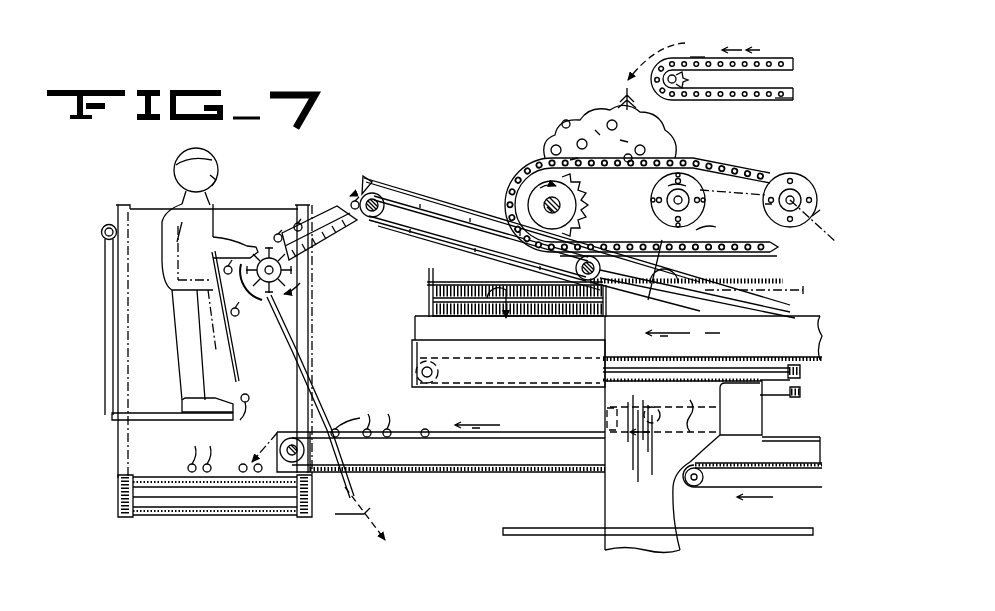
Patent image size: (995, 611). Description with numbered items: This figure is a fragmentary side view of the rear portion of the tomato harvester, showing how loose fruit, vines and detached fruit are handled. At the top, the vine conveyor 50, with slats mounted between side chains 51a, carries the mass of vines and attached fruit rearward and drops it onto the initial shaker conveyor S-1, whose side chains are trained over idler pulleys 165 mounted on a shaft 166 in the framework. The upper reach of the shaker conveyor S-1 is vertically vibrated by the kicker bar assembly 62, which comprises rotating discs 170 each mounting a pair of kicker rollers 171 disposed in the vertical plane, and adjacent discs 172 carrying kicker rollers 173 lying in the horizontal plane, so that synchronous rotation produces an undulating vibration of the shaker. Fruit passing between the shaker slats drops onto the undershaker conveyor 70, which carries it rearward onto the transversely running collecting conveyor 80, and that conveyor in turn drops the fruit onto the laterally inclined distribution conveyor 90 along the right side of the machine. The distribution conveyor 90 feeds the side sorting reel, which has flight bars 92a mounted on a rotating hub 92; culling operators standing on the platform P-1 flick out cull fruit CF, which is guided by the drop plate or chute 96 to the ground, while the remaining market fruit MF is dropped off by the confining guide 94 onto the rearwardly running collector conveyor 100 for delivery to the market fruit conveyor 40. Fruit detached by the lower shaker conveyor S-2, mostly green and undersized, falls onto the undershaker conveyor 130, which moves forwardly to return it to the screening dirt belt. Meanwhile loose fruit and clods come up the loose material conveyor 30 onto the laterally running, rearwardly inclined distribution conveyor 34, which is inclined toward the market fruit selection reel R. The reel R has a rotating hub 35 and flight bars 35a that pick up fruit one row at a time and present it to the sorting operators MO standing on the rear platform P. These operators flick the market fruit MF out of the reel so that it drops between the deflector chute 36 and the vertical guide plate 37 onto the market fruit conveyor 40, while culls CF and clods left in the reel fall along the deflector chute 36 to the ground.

The sorting operators MO is at (176, 160).
The market fruit selection reel R is at (270, 233).
The loose material conveyor 30 is at (398, 196).
The distribution conveyor 34 is at (324, 245).
The rotating hub 35 is at (270, 294).
The flight bars 35a is at (297, 270).
The deflector chute 36 is at (313, 403).
The vertical guide plate 37 is at (224, 353).
The market fruit conveyor 40 is at (140, 481).
The vine conveyor 50 is at (697, 57).
The side chains 51a is at (784, 96).
The initial shaker conveyor S-1 is at (540, 150).
The kicker bar assembly 62 is at (706, 188).
The undershaker conveyor 70 is at (781, 277).
The collecting conveyor 80 is at (440, 295).
The distribution conveyor 90 is at (735, 348).
The rotating hub 92 is at (795, 384).
The flight bars 92a is at (768, 363).
The confining guide 94 is at (753, 427).
The drop plate or chute 96 is at (677, 526).
The collector conveyor 100 is at (482, 474).
The undershaker conveyor 130 is at (789, 496).
The idler pulleys 165 is at (540, 163).
The shaft 166 is at (560, 205).
The rotating discs 170 is at (695, 175).
The kicker rollers 171 is at (666, 188).
The discs 172 is at (793, 173).
The kicker rollers 173 is at (764, 204).
The rear platform P is at (136, 420).
The platform P-1 is at (547, 528).
The lower shaker conveyor S-2 is at (598, 418).
The market fruit MF is at (231, 311).
The culls CF is at (296, 331).